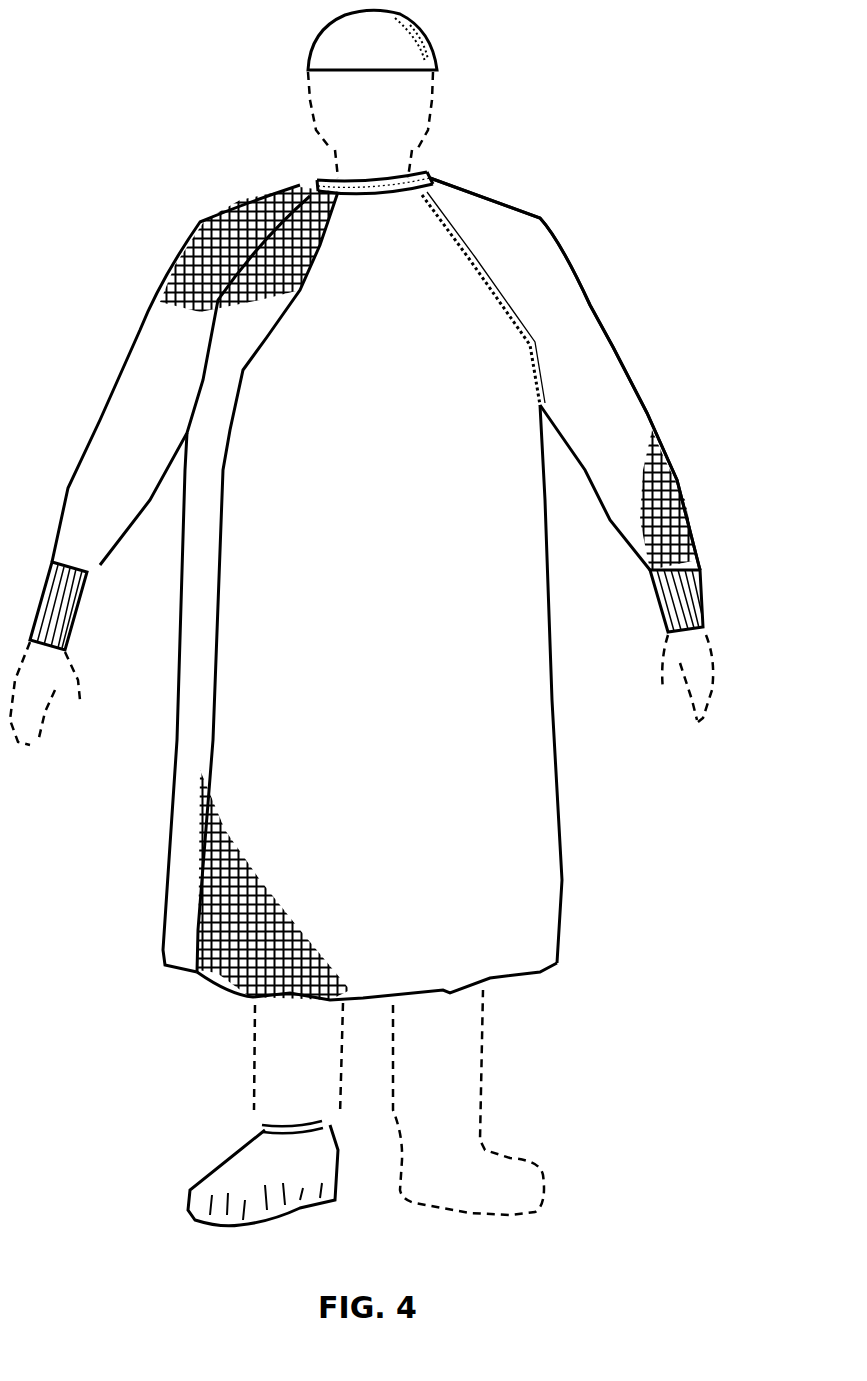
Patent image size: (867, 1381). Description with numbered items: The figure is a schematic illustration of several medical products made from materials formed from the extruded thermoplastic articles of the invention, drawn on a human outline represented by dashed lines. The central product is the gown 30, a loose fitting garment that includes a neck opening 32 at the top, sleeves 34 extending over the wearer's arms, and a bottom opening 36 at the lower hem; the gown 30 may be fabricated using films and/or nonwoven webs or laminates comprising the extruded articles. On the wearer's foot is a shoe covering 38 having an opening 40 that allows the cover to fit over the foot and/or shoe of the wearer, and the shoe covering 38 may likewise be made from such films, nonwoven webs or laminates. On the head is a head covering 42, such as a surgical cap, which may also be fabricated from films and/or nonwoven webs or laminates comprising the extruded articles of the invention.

The gown 30 is at (405, 301).
The neck opening 32 is at (422, 188).
The sleeves 34 is at (600, 370).
The bottom opening 36 is at (455, 1000).
The shoe covering 38 is at (190, 1192).
The opening 40 is at (262, 1127).
The head covering 42 is at (312, 42).